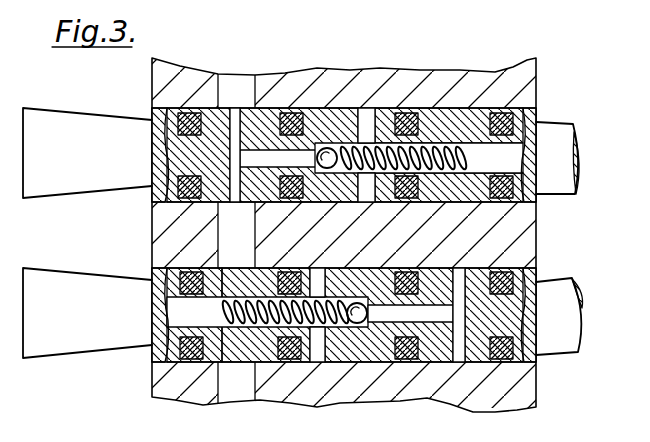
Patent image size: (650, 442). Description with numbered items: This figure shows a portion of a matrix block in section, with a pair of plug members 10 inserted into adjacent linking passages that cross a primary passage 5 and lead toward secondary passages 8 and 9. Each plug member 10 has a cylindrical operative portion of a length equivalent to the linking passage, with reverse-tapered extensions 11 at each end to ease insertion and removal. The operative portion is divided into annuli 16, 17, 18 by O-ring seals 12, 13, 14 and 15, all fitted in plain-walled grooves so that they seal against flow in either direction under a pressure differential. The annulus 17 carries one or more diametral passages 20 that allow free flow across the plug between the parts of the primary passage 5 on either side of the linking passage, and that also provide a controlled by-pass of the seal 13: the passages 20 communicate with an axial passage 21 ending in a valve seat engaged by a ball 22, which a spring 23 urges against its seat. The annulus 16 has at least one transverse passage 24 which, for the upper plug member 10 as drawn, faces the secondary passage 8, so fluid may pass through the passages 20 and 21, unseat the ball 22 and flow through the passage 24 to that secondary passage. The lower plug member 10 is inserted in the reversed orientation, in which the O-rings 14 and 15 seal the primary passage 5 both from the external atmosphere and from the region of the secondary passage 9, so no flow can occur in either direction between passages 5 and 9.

The primary passage 5 is at (233, 80).
The secondary passage 8 is at (363, 122).
The secondary passage 9 is at (345, 342).
The plug member 10 is at (574, 128).
The reverse-tapered extension 11 is at (60, 118).
The O-ring seal 12 is at (187, 112).
The O-ring seal 13 is at (289, 112).
The O-ring seal 14 is at (406, 112).
The O-ring seal 15 is at (522, 112).
The annulus 16 is at (377, 110).
The annulus 17 is at (211, 112).
The annulus 18 is at (450, 145).
The diametral passage 20 is at (222, 218).
The axial passage 21 is at (231, 208).
The ball 22 is at (321, 146).
The spring 23 is at (470, 135).
The transverse passage 24 is at (372, 205).